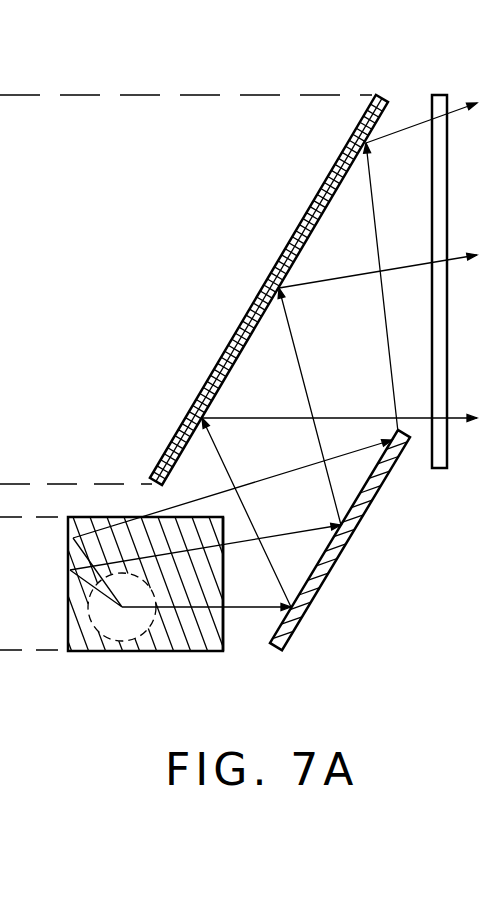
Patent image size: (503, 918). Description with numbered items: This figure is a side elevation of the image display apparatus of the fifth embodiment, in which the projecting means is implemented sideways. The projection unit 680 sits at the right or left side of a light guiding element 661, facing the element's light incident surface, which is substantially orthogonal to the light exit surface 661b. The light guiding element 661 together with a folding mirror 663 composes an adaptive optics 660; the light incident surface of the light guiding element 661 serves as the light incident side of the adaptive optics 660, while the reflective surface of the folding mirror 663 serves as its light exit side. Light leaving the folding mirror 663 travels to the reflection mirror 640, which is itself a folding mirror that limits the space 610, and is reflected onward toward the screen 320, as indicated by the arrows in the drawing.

The space 610 is at (410, 102).
The reflection mirror 640 is at (205, 386).
The screen 320 is at (437, 468).
The adaptive optics 660 is at (239, 583).
The light guiding element 661 is at (230, 572).
The light exit surface 661b is at (228, 553).
The folding mirror 663 is at (340, 562).
The projection unit 680 is at (110, 627).